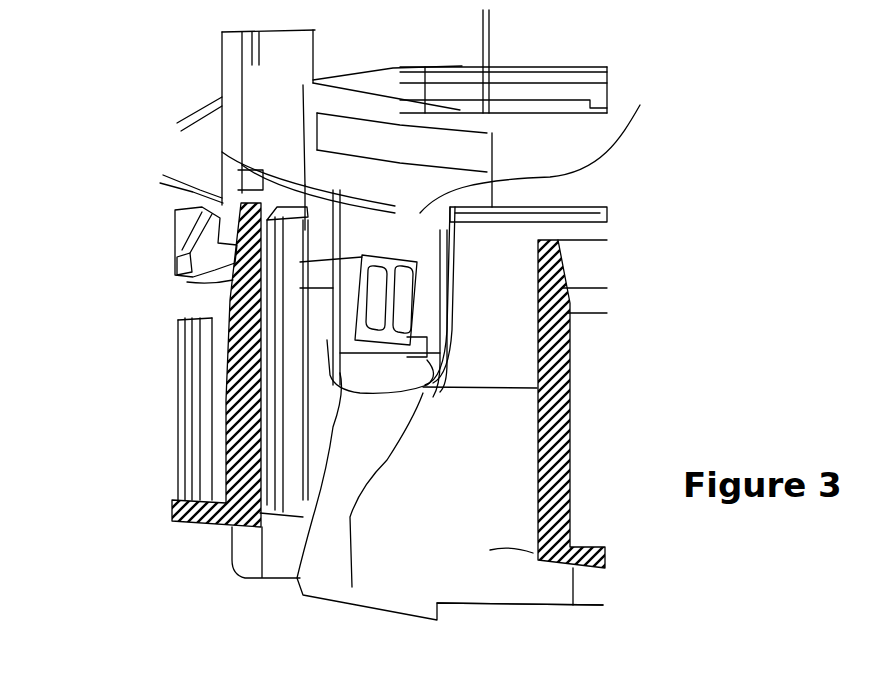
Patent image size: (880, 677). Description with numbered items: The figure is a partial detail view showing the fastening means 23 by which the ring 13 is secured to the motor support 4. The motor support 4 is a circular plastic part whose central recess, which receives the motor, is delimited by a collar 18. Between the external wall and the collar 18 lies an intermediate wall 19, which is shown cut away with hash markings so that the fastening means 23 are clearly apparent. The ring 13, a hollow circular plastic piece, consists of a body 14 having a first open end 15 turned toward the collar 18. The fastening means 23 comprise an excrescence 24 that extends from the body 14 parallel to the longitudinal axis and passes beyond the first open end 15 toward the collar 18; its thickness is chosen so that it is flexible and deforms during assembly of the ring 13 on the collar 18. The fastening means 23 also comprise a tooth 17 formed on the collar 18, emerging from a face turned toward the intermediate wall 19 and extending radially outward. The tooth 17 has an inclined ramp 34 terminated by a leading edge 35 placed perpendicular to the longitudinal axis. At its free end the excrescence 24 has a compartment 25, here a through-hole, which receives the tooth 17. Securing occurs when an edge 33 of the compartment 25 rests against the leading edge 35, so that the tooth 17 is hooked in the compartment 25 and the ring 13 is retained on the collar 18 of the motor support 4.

The ring 13 is at (200, 93).
The body 14 is at (520, 130).
The first open end 15 is at (595, 205).
The tooth 17 is at (395, 256).
The collar 18 is at (572, 370).
The intermediate wall 19 is at (200, 203).
The fastening means 23 is at (462, 302).
The excrescence 24 is at (640, 105).
The compartment 25 is at (187, 282).
The edge 33 is at (352, 587).
The ramp 34 is at (233, 292).
The leading edge 35 is at (297, 578).
The motor support 4 is at (473, 563).